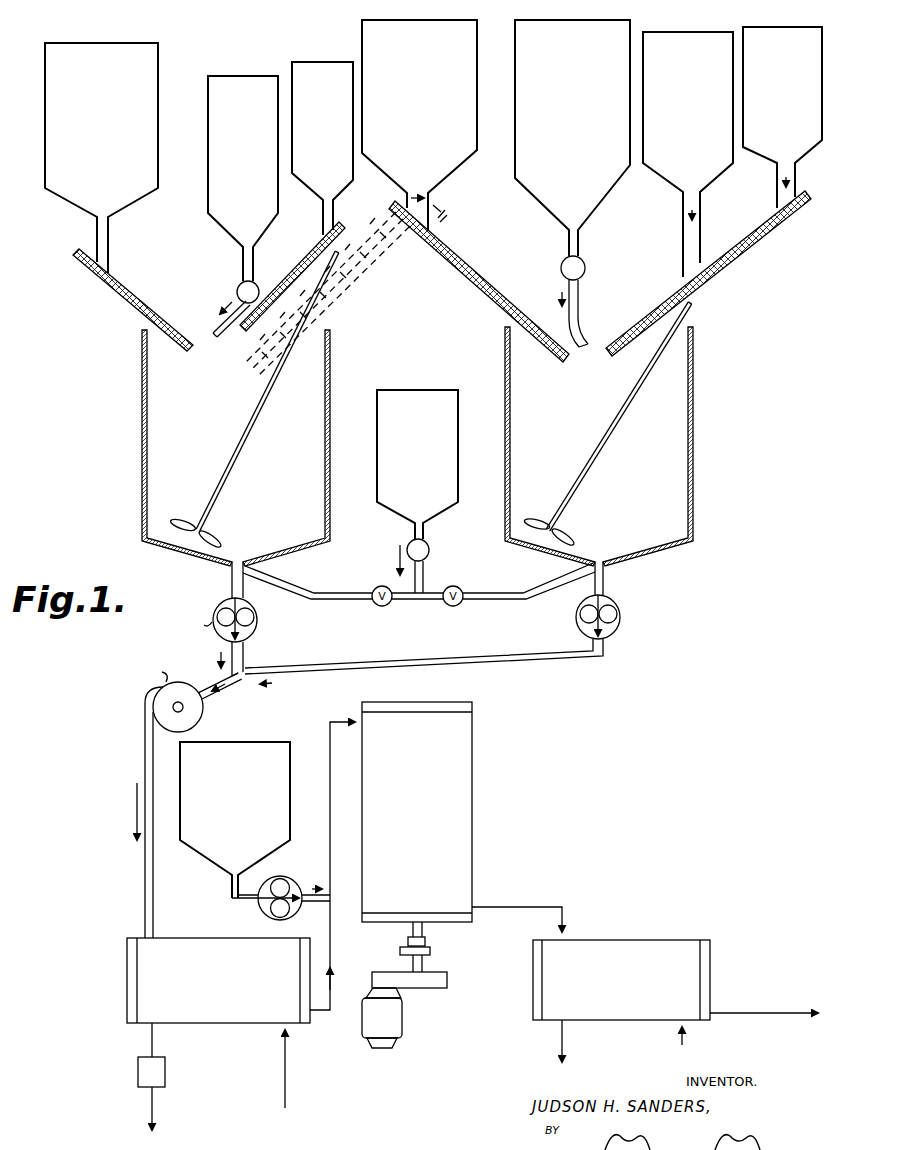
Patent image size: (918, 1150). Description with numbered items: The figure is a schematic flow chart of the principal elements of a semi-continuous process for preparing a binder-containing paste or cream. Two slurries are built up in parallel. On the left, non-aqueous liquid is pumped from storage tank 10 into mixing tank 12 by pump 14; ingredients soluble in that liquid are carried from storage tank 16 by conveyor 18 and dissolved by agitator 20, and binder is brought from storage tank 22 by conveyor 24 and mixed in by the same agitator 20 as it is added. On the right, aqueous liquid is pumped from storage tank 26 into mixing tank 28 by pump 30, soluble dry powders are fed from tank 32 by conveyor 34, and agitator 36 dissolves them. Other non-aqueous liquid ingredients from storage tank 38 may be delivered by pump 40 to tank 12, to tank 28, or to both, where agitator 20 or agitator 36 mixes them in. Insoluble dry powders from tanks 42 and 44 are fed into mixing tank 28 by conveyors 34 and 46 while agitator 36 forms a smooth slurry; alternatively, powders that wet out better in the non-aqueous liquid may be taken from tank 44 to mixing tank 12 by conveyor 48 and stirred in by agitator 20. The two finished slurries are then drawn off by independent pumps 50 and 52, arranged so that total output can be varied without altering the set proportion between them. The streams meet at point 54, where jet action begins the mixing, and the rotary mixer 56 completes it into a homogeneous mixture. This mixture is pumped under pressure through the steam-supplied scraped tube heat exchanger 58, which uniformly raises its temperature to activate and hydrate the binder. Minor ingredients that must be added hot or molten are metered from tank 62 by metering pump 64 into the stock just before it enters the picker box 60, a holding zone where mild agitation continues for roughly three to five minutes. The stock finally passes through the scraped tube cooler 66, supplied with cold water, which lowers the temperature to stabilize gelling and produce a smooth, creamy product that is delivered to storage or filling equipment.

The storage tank for non-aqueous liquid 10 is at (286, 218).
The mixing tank 12 is at (330, 533).
The pump 14 is at (238, 290).
The storage tank for soluble ingredients 16 is at (352, 187).
The conveyor 18 is at (304, 266).
The agitator 20 is at (340, 266).
The binder storage tank 22 is at (76, 212).
The conveyor 24 is at (108, 292).
The aqueous liquid storage tank 26 is at (608, 205).
The mixing tank 28 is at (693, 511).
The pump 30 is at (586, 268).
The soluble dry powder tank 32 is at (774, 164).
The conveyor 34 is at (726, 264).
The agitator 36 is at (694, 312).
The storage tank for other non-aqueous liquid ingredients 38 is at (450, 507).
The pump 40 is at (430, 550).
The insoluble dry powder tank 42 is at (704, 178).
The insoluble dry powder tank 44 is at (451, 182).
The conveyor 46 is at (476, 294).
The conveyor 48 is at (342, 300).
The pump 50 is at (257, 622).
The pump 52 is at (620, 618).
The meeting point 54 is at (240, 679).
The rotary mixer 56 is at (203, 712).
The heat exchanger 58 is at (206, 1023).
The picker box 60 is at (473, 840).
The tank 62 is at (214, 860).
The metering pump 64 is at (272, 880).
The scraped tube cooler 66 is at (598, 1022).